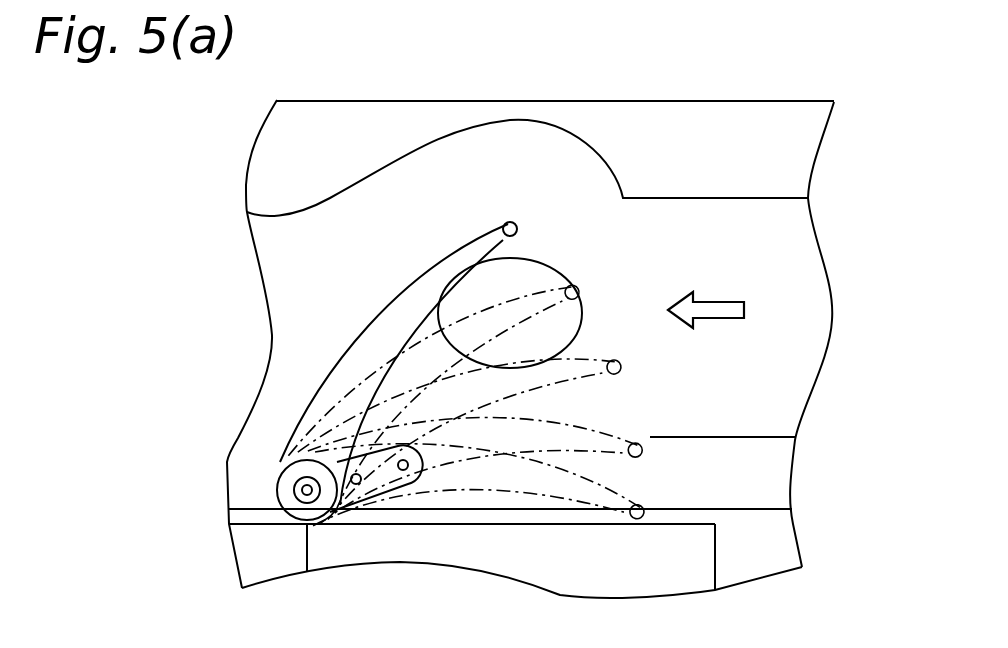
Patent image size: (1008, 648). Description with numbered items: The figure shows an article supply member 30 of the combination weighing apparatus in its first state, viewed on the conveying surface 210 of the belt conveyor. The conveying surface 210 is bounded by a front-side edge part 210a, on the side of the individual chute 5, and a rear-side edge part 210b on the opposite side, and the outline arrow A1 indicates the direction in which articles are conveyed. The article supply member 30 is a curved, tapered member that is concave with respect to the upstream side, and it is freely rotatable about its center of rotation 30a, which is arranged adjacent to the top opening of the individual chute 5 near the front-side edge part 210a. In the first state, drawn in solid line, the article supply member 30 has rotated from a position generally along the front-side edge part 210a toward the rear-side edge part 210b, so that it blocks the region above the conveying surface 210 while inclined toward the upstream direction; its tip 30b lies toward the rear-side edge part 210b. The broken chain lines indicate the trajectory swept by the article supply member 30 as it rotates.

The conveying surface 210 is at (770, 250).
The front-side edge part 210a is at (455, 510).
The rear-side edge part 210b is at (537, 100).
The article supply member 30 is at (402, 306).
The center of rotation 30a is at (305, 488).
The tip 30b is at (517, 220).
The individual chute 5 is at (690, 555).
The outline arrow A1 is at (724, 318).